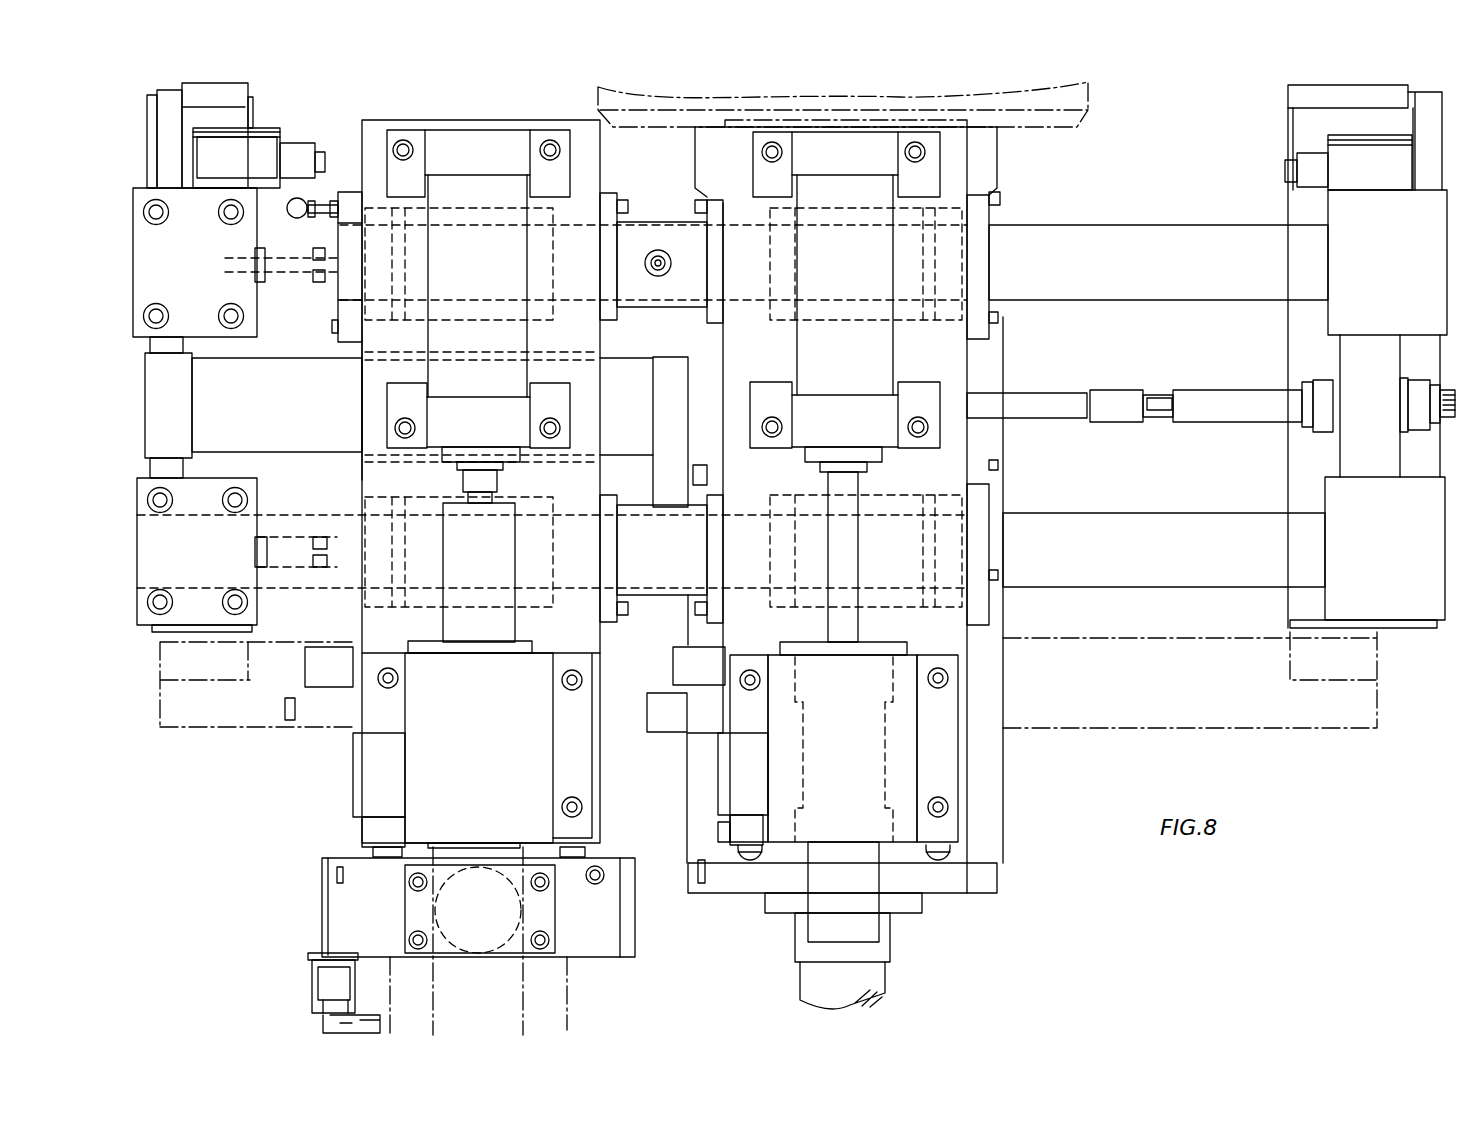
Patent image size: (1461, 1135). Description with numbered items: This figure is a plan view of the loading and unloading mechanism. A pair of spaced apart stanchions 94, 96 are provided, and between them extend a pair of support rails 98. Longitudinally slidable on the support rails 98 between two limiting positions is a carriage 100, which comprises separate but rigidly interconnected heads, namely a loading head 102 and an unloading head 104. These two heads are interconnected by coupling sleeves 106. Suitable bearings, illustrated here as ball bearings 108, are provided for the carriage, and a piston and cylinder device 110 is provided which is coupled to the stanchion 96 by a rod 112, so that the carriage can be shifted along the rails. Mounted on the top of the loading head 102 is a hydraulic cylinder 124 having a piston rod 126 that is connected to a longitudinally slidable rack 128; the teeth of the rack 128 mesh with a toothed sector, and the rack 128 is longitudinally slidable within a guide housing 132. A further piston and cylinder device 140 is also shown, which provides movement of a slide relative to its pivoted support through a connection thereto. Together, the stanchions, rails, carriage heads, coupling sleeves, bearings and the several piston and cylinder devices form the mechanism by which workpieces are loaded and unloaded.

The stanchion 94 is at (141, 250).
The stanchion 96 is at (1325, 257).
The support rails 98 is at (1138, 238).
The carriage 100 is at (358, 130).
The loading head 102 is at (362, 380).
The unloading head 104 is at (967, 352).
The coupling sleeves 106 is at (660, 222).
The ball bearings 108 is at (903, 472).
The piston and cylinder device 110 is at (248, 430).
The rod 112 is at (1238, 372).
The hydraulic cylinder 124 is at (527, 336).
The piston rod 126 is at (858, 553).
The rack 128 is at (500, 547).
The guide housing 132 is at (500, 775).
The piston and cylinder device 140 is at (515, 978).